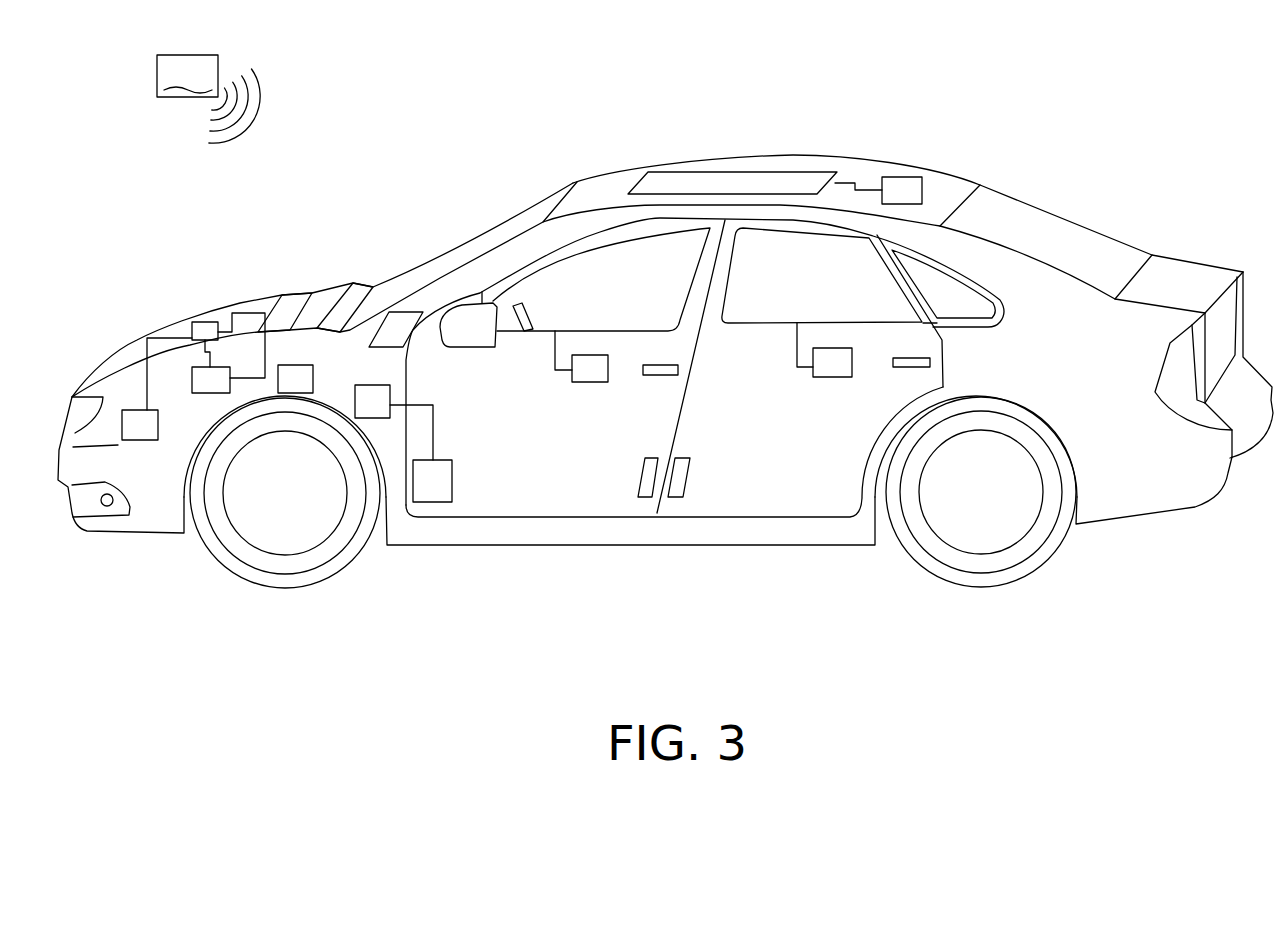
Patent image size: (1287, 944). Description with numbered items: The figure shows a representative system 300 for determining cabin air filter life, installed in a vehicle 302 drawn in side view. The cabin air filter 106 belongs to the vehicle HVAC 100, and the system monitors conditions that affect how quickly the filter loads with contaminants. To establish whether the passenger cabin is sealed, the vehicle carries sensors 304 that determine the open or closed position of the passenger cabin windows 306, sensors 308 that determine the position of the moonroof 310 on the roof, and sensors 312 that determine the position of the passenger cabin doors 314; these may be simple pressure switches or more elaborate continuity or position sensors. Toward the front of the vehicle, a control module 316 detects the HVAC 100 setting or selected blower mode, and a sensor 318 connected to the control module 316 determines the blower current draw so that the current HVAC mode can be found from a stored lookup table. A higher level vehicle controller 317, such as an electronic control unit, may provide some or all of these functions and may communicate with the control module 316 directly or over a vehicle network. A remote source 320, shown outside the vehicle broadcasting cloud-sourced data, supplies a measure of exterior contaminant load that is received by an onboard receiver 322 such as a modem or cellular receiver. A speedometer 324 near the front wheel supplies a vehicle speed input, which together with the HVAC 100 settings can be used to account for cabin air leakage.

The HVAC 100 is at (293, 293).
The cabin air filter 106 is at (391, 403).
The system 300 is at (481, 165).
The vehicle 302 is at (1192, 262).
The sensors 304 is at (590, 383).
The passenger cabin windows 306 is at (590, 293).
The sensors 308 is at (903, 177).
The moonroof 310 is at (748, 171).
The sensors 312 is at (647, 498).
The passenger cabin doors 314 is at (528, 497).
The control module 316 is at (203, 320).
The vehicle controller 317 is at (140, 410).
The sensor 318 is at (200, 395).
The remote source 320 is at (208, 99).
The receiver 322 is at (403, 310).
The speedometer 324 is at (295, 395).